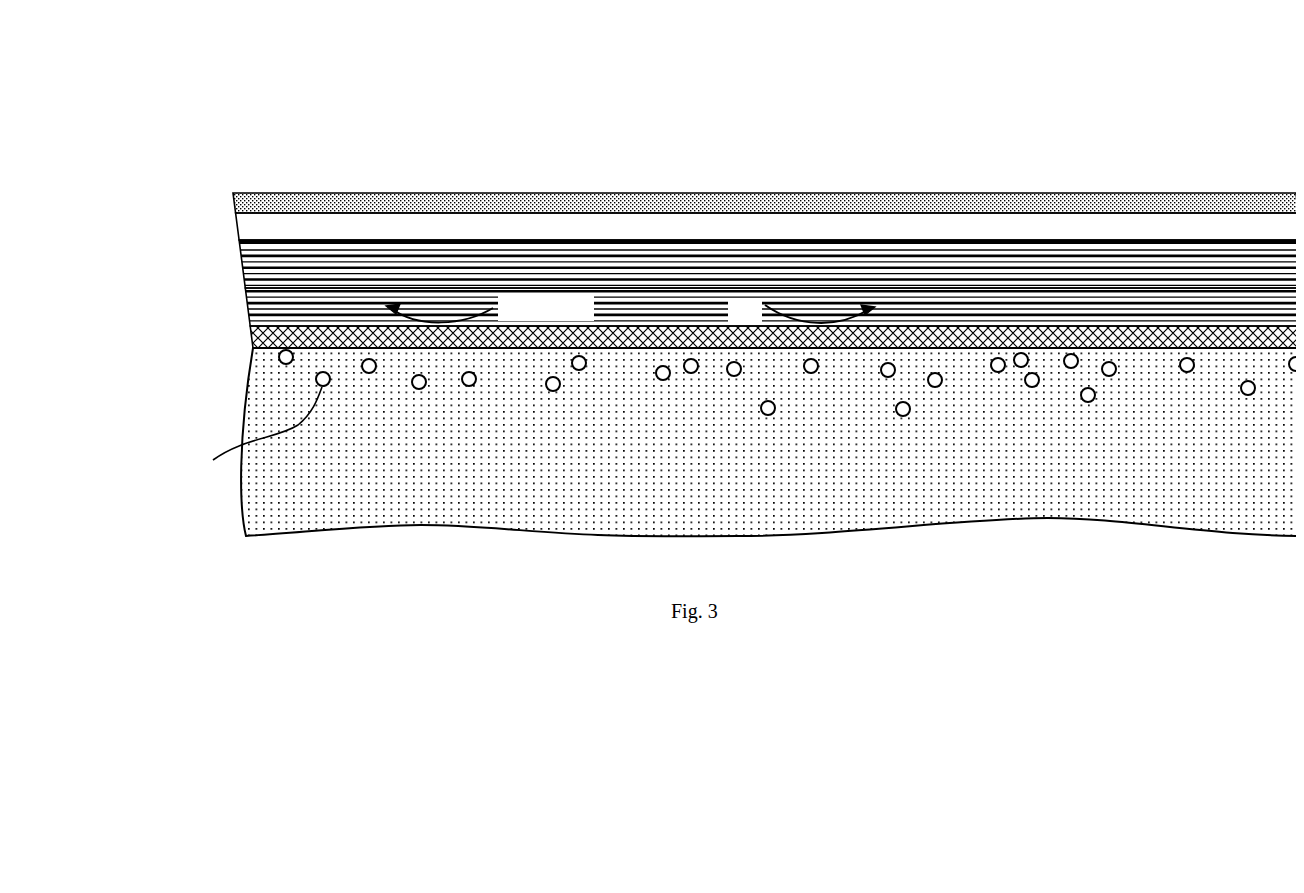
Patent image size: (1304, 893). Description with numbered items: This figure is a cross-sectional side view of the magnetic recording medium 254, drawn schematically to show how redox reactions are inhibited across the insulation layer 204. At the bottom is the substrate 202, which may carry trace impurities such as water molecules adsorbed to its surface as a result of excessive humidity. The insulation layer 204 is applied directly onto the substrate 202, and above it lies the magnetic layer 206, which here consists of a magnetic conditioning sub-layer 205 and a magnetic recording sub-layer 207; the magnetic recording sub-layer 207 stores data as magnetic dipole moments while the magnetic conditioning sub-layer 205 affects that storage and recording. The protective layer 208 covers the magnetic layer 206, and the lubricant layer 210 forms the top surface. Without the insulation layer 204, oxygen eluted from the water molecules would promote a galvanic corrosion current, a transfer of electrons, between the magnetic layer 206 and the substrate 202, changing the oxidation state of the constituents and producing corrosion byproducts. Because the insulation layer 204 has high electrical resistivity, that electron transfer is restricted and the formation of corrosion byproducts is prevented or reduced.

The magnetic recording medium 254 is at (684, 287).
The lubricant layer 210 is at (228, 205).
The protective layer 208 is at (232, 222).
The magnetic recording sub-layer 207 is at (242, 244).
The magnetic layer 206 is at (684, 283).
The magnetic conditioning sub-layer 205 is at (245, 297).
The insulation layer 204 is at (247, 332).
The substrate 202 is at (245, 370).